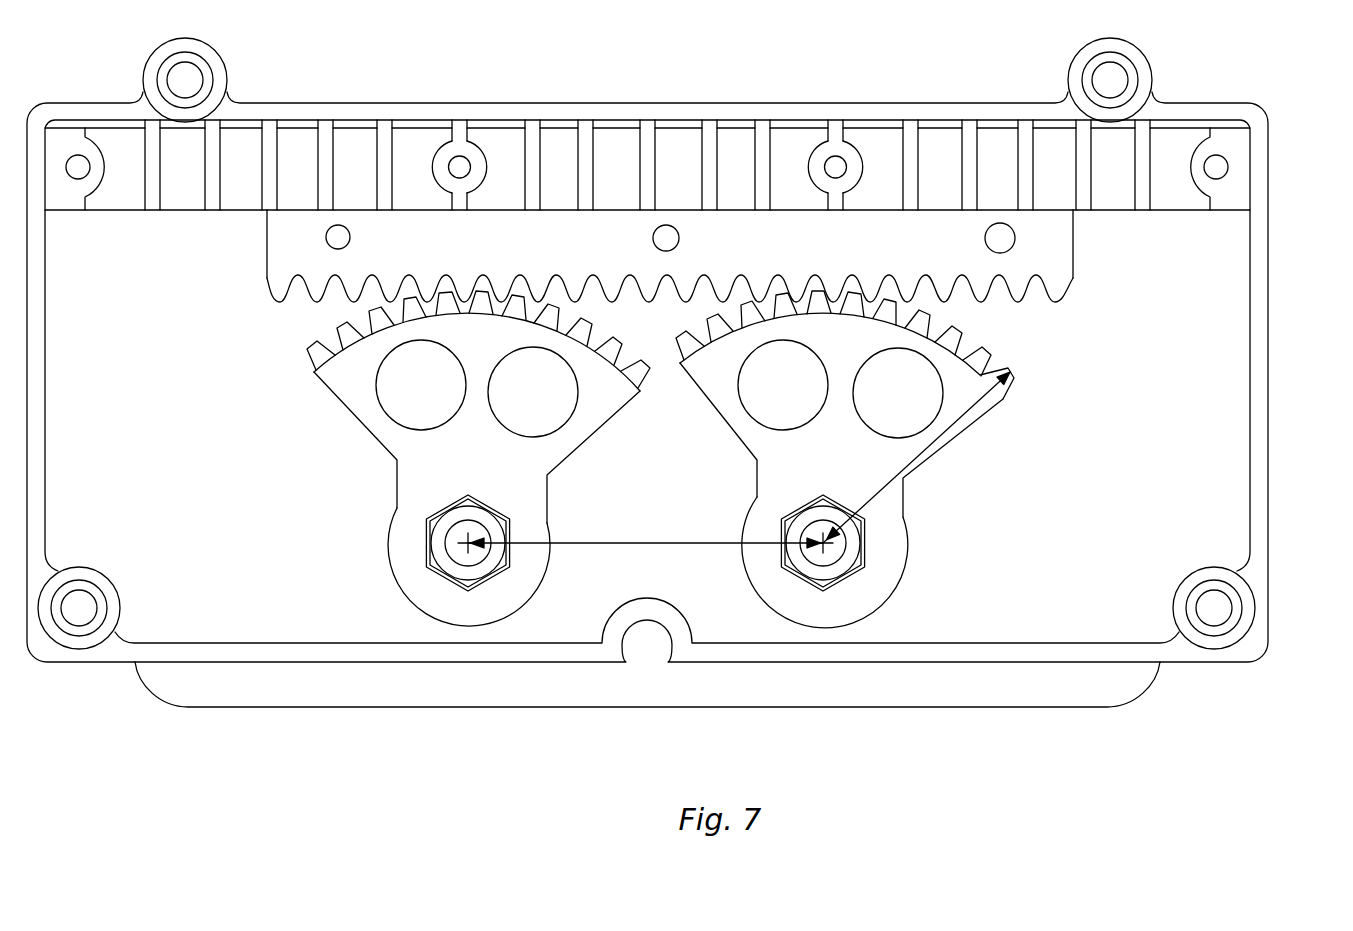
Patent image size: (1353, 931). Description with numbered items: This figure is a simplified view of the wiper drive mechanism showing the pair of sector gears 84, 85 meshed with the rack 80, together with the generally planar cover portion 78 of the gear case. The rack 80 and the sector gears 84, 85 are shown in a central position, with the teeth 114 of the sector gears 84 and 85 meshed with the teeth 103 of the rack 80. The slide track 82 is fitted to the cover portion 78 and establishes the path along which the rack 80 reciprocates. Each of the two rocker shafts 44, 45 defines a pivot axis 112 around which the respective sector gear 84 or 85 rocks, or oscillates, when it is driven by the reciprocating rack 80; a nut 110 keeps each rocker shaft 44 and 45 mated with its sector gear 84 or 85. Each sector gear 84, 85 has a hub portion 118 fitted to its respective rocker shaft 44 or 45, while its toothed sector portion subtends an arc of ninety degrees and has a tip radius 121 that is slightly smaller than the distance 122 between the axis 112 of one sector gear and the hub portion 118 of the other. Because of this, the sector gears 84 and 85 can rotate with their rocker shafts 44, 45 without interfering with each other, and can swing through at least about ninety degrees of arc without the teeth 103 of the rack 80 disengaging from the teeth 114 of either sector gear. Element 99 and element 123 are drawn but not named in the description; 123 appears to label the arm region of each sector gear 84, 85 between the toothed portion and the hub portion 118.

The cover portion 78 is at (1262, 403).
The rack 80 is at (662, 272).
The slide track 82 is at (1170, 182).
The sector gear 84 is at (357, 393).
The sector gear 85 is at (958, 390).
The holes 99 is at (710, 236).
The teeth of the rack 103 is at (290, 295).
The nut 110 is at (790, 563).
The pivot axis 112 is at (818, 532).
The teeth of the sector gears 114 is at (982, 342).
The hub portion 118 is at (880, 565).
The tip radius 121 is at (967, 425).
The distance 122 is at (633, 543).
The gear arm 123 is at (757, 483).
The rocker shaft 44 is at (455, 530).
The rocker shaft 45 is at (825, 522).